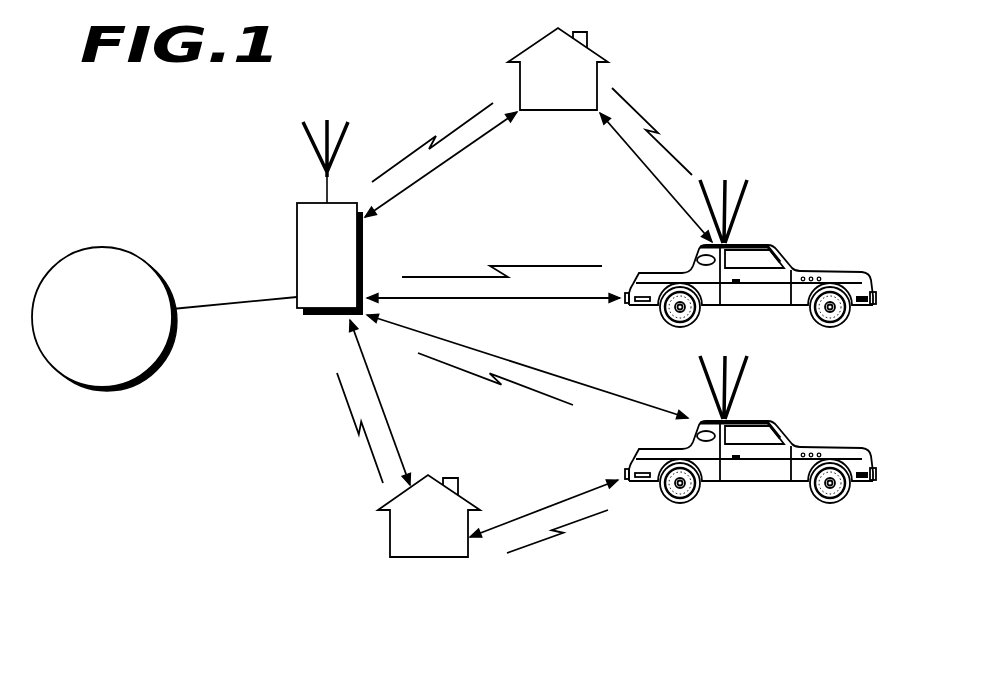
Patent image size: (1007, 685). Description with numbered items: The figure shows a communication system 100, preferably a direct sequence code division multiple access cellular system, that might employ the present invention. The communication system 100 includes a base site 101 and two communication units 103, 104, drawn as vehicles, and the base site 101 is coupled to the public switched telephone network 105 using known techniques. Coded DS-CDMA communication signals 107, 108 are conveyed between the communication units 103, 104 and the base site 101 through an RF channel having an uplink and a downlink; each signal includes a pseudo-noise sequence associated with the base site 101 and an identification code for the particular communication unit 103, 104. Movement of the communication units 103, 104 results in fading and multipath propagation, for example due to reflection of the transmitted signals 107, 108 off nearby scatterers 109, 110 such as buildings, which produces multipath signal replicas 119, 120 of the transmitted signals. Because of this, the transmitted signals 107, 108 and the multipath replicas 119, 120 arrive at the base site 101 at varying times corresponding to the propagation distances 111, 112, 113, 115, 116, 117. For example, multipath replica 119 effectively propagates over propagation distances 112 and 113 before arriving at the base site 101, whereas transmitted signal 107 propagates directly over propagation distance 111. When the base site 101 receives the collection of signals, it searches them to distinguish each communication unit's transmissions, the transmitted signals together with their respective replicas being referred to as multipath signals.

The communication system 100 is at (198, 112).
The base site 101 is at (312, 315).
The communication unit 103 is at (817, 277).
The communication unit 104 is at (817, 452).
The public switched telephone network (PSTN) 105 is at (118, 390).
The DS-CDMA communication signal 107 is at (668, 143).
The DS-CDMA communication signal 108 is at (527, 390).
The scatterer 109 is at (598, 53).
The scatterer 110 is at (415, 557).
The propagation distance 111 is at (517, 298).
The propagation distance 112 is at (432, 173).
The propagation distance 113 is at (645, 170).
The propagation distance 115 is at (627, 395).
The propagation distance 116 is at (538, 512).
The propagation distance 117 is at (388, 425).
The multipath signal replica 119 is at (418, 147).
The multipath signal replica 120 is at (368, 450).